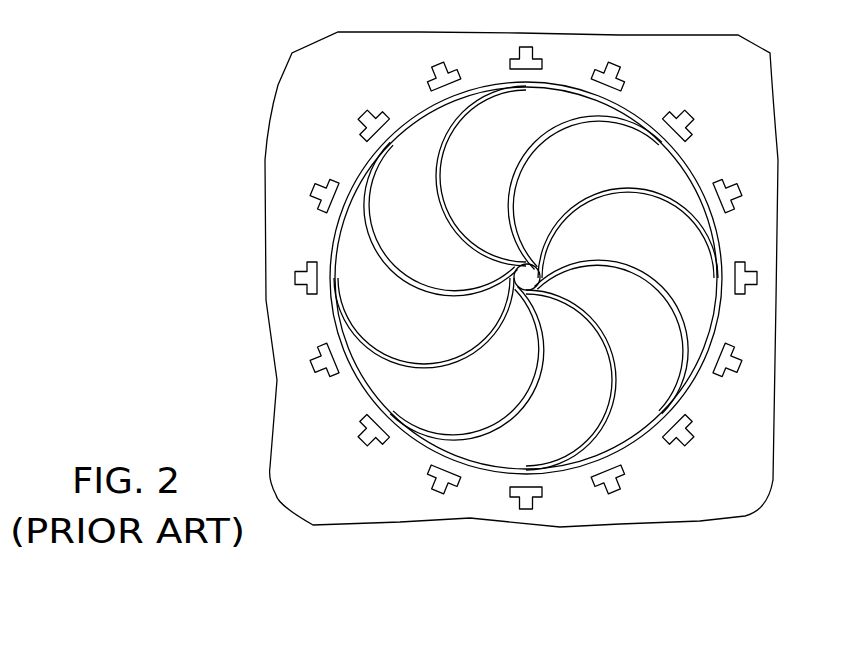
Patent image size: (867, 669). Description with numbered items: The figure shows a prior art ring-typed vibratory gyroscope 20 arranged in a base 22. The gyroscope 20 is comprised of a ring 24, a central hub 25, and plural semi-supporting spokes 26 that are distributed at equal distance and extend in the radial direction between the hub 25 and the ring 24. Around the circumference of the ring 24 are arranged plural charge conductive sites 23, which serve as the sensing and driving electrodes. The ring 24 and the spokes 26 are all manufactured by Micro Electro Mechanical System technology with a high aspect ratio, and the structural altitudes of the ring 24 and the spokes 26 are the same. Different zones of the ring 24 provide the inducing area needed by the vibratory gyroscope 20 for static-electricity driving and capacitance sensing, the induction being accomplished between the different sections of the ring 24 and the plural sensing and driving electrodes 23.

The ring-typed vibratory gyroscope 20 is at (246, 135).
The base 22 is at (320, 43).
The charge conductive sites 23 is at (337, 180).
The ring 24 is at (633, 438).
The hub 25 is at (532, 270).
The semi-supporting spoke 26 is at (510, 200).